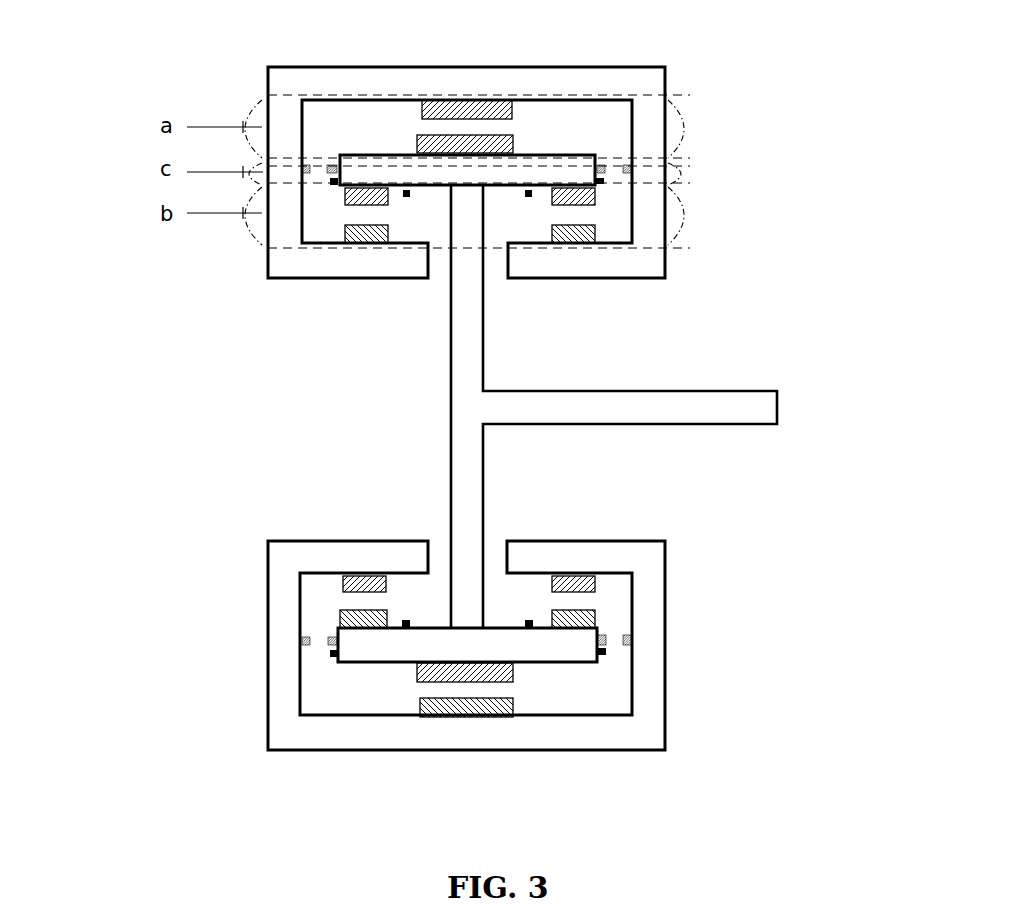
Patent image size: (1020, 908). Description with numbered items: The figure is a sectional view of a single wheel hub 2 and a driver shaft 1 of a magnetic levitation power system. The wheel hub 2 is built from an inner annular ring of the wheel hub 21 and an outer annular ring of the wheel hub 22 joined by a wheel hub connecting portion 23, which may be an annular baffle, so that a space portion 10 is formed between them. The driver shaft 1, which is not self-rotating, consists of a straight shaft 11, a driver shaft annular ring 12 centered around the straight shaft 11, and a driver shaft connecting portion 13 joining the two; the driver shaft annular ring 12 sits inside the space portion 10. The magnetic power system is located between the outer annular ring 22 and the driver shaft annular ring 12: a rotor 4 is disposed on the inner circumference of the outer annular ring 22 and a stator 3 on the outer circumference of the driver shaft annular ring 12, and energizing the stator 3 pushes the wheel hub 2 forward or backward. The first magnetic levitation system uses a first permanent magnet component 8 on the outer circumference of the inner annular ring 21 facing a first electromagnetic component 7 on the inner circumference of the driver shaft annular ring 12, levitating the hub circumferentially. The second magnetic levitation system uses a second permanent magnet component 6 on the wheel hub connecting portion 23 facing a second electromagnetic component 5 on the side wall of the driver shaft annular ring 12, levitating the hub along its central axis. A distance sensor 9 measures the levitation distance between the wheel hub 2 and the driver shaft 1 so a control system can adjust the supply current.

The driver shaft 1 is at (912, 82).
The wheel hub 2 is at (90, 345).
The stator 3 is at (505, 137).
The rotor 4 is at (480, 97).
The second electromagnetic component 5 is at (605, 166).
The second permanent magnet component 6 is at (625, 170).
The first electromagnetic component 7 is at (597, 200).
The first permanent magnet component 8 is at (578, 248).
The distance sensor 9 is at (603, 182).
The space portion 10 is at (385, 113).
The straight shaft 11 is at (707, 408).
The driver shaft annular ring 12 is at (563, 168).
The driver shaft connecting portion 13 is at (471, 347).
The inner annular ring of the wheel hub 21 is at (528, 257).
The outer annular ring of the wheel hub 22 is at (375, 78).
The wheel hub connecting portion 23 is at (278, 195).